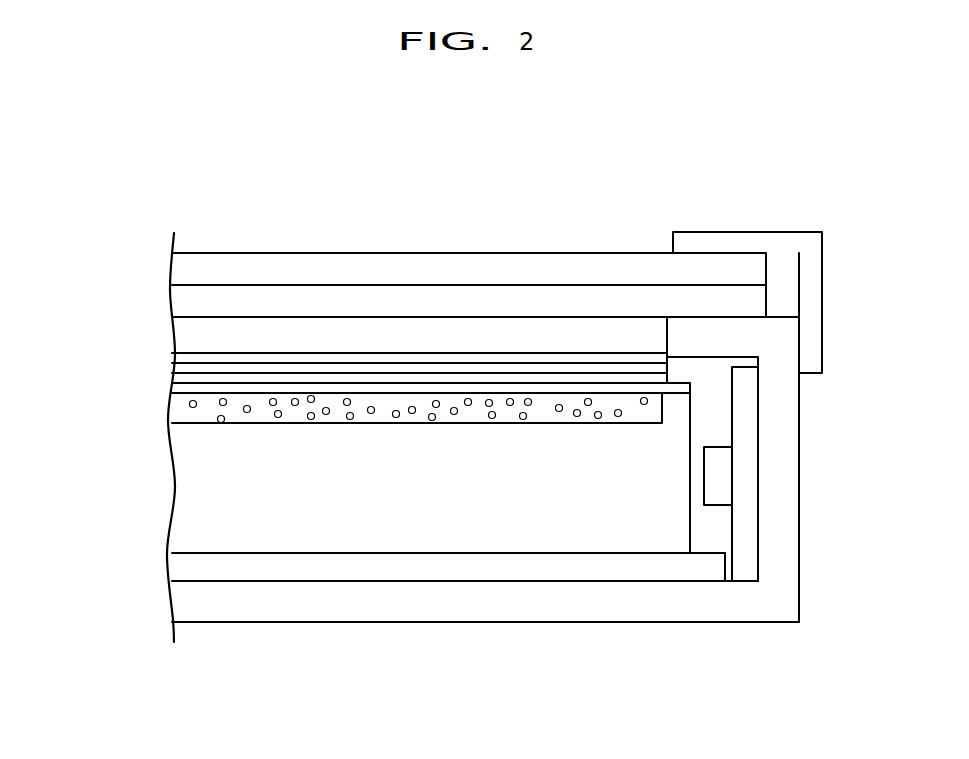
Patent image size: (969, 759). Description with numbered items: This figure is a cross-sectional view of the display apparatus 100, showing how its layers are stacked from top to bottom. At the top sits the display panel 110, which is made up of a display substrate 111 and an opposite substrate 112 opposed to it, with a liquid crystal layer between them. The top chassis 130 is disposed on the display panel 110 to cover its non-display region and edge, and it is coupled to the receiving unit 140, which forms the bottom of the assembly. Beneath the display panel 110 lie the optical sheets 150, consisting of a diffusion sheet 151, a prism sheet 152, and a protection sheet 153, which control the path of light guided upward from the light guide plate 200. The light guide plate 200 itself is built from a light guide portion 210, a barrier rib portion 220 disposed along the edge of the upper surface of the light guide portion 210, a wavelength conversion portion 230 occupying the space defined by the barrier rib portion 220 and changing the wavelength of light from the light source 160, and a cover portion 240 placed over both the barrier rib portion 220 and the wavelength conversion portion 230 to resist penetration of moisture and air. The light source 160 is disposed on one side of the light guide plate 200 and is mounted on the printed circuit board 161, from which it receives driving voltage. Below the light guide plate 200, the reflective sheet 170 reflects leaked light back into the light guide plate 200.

The display apparatus 100 is at (790, 173).
The display panel 110 is at (419, 285).
The display substrate 111 is at (183, 301).
The opposite substrate 112 is at (183, 269).
The top chassis 130 is at (810, 293).
The receiving unit 140 is at (333, 602).
The optical sheets 150 is at (353, 363).
The diffusion sheet 151 is at (185, 379).
The prism sheet 152 is at (185, 368).
The protection sheet 153 is at (185, 357).
The light source 160 is at (713, 480).
The printed circuit board 161 is at (742, 425).
The reflective sheet 170 is at (249, 567).
The light guide plate 200 is at (448, 552).
The light guide portion 210 is at (567, 522).
The barrier rib portion 220 is at (678, 400).
The wavelength conversion portion 230 is at (477, 410).
The cover portion 240 is at (392, 385).